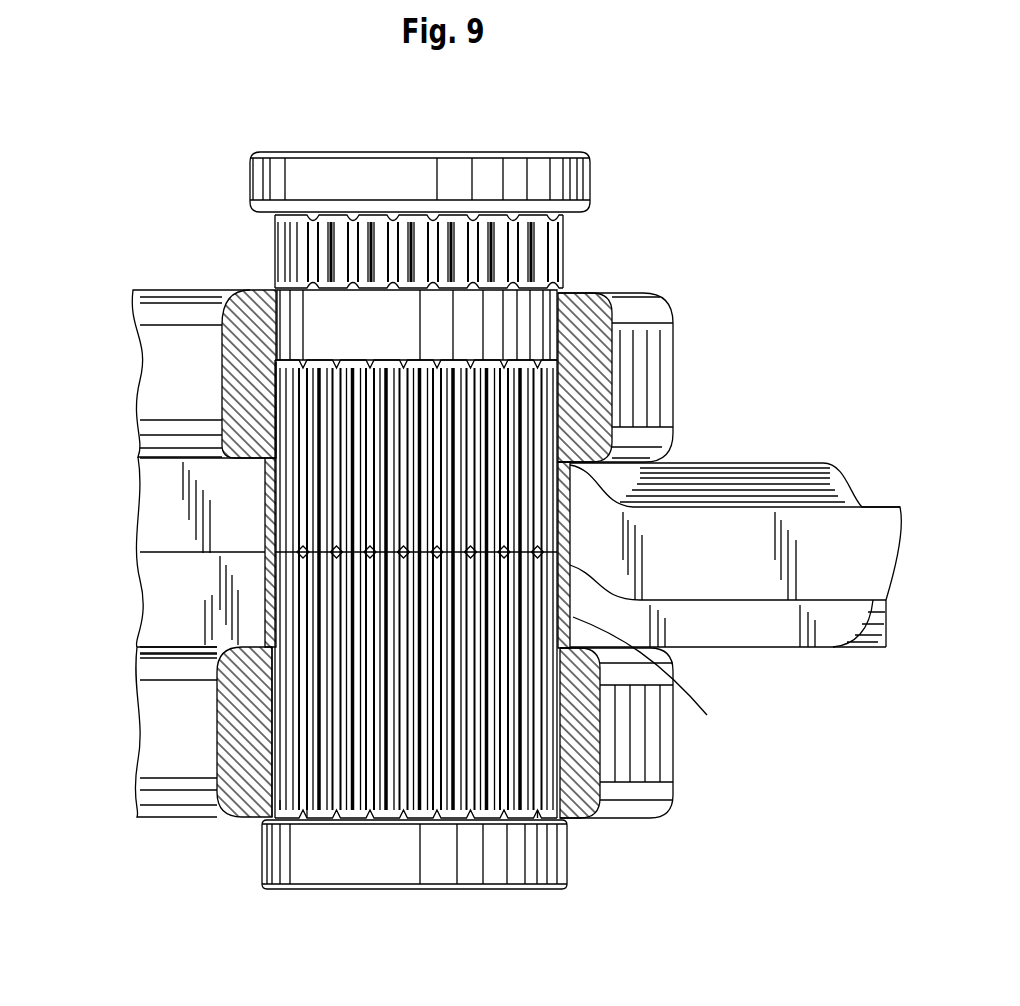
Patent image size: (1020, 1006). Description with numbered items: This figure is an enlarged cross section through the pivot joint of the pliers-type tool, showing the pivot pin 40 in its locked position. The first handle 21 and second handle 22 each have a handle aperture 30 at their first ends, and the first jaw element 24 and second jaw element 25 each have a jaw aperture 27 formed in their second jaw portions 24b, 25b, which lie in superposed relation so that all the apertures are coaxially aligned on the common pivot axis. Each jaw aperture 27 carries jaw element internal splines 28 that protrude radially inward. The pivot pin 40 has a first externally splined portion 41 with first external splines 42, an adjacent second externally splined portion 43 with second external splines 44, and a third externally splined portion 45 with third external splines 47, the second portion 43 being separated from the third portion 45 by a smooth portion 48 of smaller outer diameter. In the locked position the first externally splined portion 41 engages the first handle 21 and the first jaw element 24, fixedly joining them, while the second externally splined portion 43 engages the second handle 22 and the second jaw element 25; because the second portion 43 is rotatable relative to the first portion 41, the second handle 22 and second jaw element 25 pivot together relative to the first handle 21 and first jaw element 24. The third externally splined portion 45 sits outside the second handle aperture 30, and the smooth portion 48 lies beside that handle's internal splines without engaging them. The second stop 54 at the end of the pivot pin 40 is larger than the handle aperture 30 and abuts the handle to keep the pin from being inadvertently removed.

The pivot pin 40 is at (563, 141).
The third external splines 47 is at (318, 237).
The third externally splined portion 45 is at (565, 258).
The smooth portion 48 is at (305, 314).
The second handle 22 is at (150, 352).
The second external splines 44 is at (520, 440).
The second externally splined portion 43 is at (540, 470).
The jaw aperture 27 is at (263, 512).
The second jaw element 25 is at (138, 470).
The second jaw portion of second jaw element 25b is at (765, 525).
The first jaw element 24 is at (145, 597).
The second jaw portion of first jaw element 24b is at (788, 640).
The jaw element internal splines 28 is at (658, 675).
The first handle 21 is at (155, 735).
The handle aperture 30 is at (280, 385).
The first externally splined portion 41 is at (313, 778).
The first external splines 42 is at (317, 820).
The second stop 54 is at (430, 880).